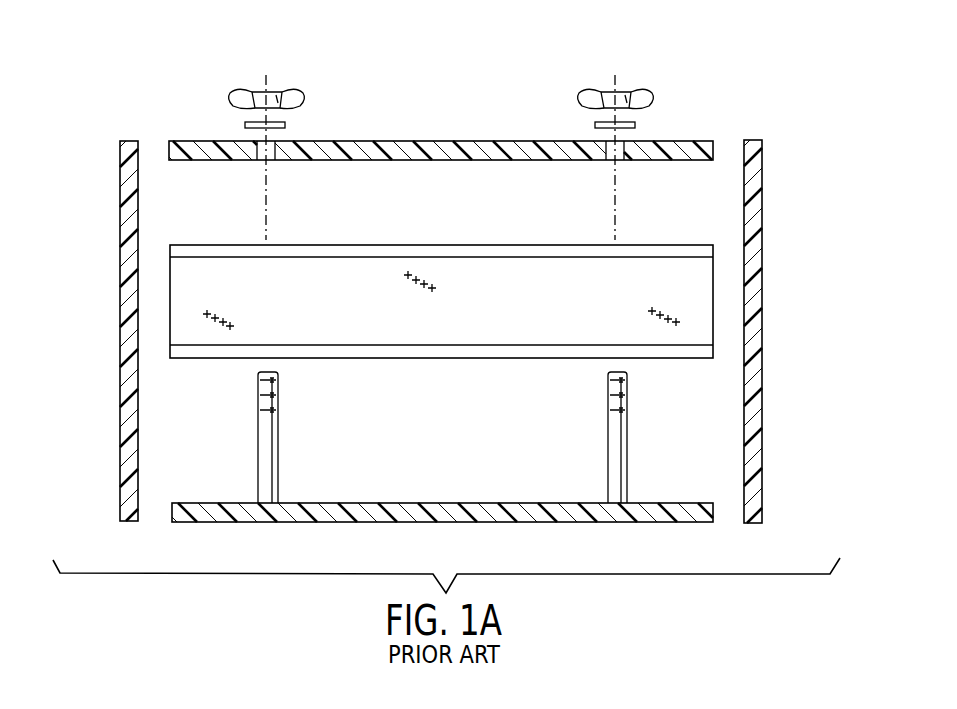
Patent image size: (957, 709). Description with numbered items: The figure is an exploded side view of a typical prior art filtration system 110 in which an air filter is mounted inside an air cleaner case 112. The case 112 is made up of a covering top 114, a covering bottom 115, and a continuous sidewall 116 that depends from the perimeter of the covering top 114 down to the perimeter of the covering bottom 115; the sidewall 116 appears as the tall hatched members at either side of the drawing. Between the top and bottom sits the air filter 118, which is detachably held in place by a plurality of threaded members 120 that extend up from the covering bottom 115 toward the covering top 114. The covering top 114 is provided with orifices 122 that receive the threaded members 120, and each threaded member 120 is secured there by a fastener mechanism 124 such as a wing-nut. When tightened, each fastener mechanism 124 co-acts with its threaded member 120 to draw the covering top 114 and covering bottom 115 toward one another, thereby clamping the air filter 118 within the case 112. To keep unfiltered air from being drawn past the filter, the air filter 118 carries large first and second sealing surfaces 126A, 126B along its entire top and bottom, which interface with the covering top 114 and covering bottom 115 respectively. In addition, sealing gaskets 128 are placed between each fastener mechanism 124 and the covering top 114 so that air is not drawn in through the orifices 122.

The prior art filtration system 110 is at (800, 118).
The air cleaner case 112 is at (411, 345).
The covering top 114 is at (713, 148).
The covering bottom 115 is at (705, 513).
The continuous sidewall 116 is at (125, 522).
The air filter 118 is at (492, 306).
The threaded member 120 is at (276, 452).
The orifice 122 is at (273, 142).
The fastener mechanism 124 is at (292, 92).
The first sealing surface 126A is at (657, 248).
The second sealing surface 126B is at (657, 350).
The sealing gasket 128 is at (246, 125).